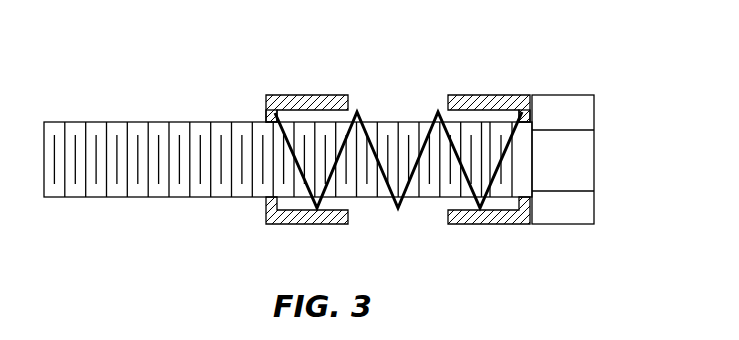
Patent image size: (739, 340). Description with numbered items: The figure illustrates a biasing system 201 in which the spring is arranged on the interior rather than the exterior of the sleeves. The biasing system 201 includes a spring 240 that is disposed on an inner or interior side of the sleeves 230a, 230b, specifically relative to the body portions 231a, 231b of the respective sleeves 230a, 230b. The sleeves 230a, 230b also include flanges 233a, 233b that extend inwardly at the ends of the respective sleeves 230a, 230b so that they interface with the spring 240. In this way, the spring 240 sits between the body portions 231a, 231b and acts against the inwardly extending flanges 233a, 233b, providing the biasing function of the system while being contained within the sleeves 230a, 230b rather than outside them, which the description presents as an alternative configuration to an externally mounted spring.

The biasing system 201 is at (389, 38).
The sleeve 230b is at (275, 136).
The body portion 231b is at (316, 99).
The flange 233b is at (295, 77).
The spring 240 is at (438, 112).
The body portion 231a is at (483, 95).
The sleeve 230a is at (531, 135).
The flange 233a is at (524, 112).